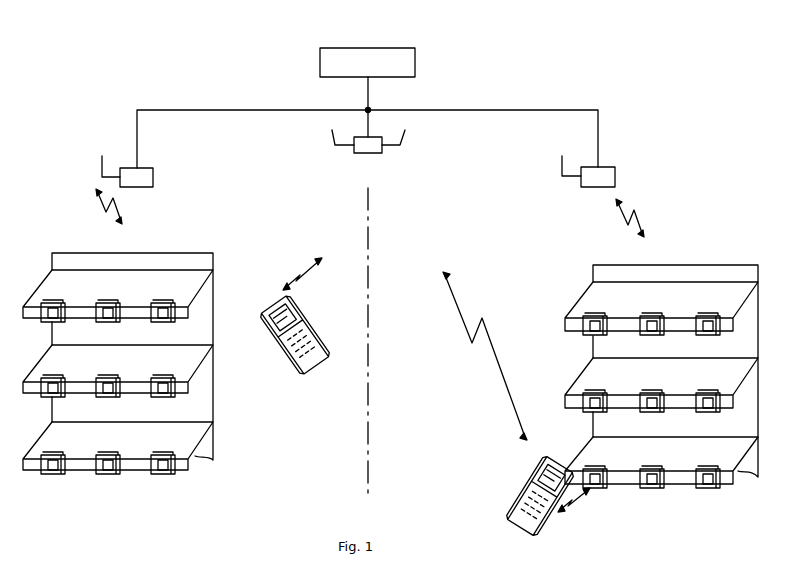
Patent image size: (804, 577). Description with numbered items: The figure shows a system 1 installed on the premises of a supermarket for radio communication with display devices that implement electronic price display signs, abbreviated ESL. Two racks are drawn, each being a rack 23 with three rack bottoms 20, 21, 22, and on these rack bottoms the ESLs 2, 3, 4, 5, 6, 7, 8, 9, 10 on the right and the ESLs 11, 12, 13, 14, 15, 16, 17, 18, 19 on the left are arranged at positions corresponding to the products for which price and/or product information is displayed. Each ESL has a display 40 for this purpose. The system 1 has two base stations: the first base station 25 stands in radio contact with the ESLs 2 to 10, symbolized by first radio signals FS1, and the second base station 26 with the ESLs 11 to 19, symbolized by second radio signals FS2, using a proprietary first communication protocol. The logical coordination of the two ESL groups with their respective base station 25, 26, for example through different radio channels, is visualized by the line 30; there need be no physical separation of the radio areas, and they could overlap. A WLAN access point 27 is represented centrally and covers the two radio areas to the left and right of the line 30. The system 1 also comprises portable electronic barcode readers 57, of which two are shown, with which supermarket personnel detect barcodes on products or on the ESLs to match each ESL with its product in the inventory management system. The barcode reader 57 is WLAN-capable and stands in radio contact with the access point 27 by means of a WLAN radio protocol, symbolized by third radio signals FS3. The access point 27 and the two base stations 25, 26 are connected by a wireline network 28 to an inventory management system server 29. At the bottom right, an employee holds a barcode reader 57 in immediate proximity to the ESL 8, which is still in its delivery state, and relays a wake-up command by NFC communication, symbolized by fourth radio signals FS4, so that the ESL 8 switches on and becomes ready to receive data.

The system 1 is at (677, 73).
The electronic price display sign (ESL) 2 is at (597, 314).
The electronic price display sign (ESL) 3 is at (654, 314).
The electronic price display sign (ESL) 4 is at (710, 314).
The electronic price display sign (ESL) 5 is at (597, 391).
The electronic price display sign (ESL) 6 is at (654, 391).
The electronic price display sign (ESL) 7 is at (710, 391).
The electronic price display sign (ESL) 8 is at (597, 467).
The electronic price display sign (ESL) 9 is at (654, 467).
The electronic price display sign (ESL) 10 is at (711, 467).
The electronic price display sign (ESL) 11 is at (55, 301).
The electronic price display sign (ESL) 12 is at (110, 301).
The electronic price display sign (ESL) 13 is at (165, 301).
The electronic price display sign (ESL) 14 is at (55, 376).
The electronic price display sign (ESL) 15 is at (110, 376).
The electronic price display sign (ESL) 16 is at (165, 376).
The electronic price display sign (ESL) 17 is at (55, 453).
The electronic price display sign (ESL) 18 is at (110, 453).
The electronic price display sign (ESL) 19 is at (165, 453).
The rack bottom 20 is at (44, 278).
The rack bottom 21 is at (40, 366).
The rack bottom 22 is at (40, 442).
The rack 23 is at (200, 253).
The first base station 25 is at (615, 167).
The second base station 26 is at (153, 168).
The access point 27 is at (386, 154).
The wireline network 28 is at (505, 110).
The inventory management system server 29 is at (415, 60).
The line 30 is at (371, 203).
The display 40 is at (55, 322).
The portable electronic barcode reader 57 is at (300, 302).
The first radio signals FS1 is at (642, 218).
The second radio signals FS2 is at (125, 212).
The third radio signals FS3 is at (308, 273).
The fourth radio signals FS4 is at (565, 505).